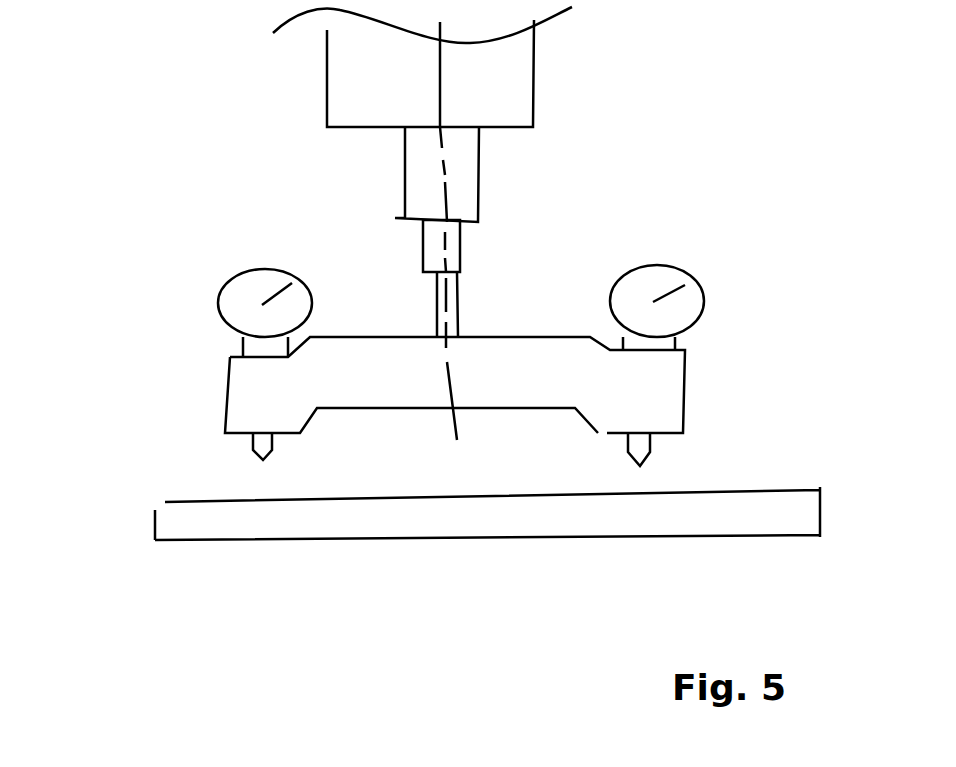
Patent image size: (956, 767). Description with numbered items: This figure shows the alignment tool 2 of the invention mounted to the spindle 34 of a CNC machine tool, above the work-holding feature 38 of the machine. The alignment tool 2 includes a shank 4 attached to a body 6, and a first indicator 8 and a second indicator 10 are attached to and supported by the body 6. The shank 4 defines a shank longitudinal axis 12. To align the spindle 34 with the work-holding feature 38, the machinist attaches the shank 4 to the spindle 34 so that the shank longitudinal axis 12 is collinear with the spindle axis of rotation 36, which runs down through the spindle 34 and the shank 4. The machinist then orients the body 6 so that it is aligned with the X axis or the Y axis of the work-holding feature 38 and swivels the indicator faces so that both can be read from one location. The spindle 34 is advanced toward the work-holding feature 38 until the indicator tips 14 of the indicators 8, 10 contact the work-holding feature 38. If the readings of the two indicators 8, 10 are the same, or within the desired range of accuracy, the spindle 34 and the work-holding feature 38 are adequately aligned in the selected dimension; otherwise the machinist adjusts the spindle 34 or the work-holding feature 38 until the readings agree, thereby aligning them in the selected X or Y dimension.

The alignment tool 2 is at (742, 91).
The shank 4 is at (460, 307).
The body 6 is at (557, 340).
The first indicator 8 is at (230, 278).
The second indicator 10 is at (688, 272).
The shank longitudinal axis 12 is at (440, 262).
The indicator tips 14 is at (257, 457).
The spindle 34 is at (465, 173).
The spindle axis of rotation 36 is at (440, 59).
The work-holding feature 38 is at (492, 547).